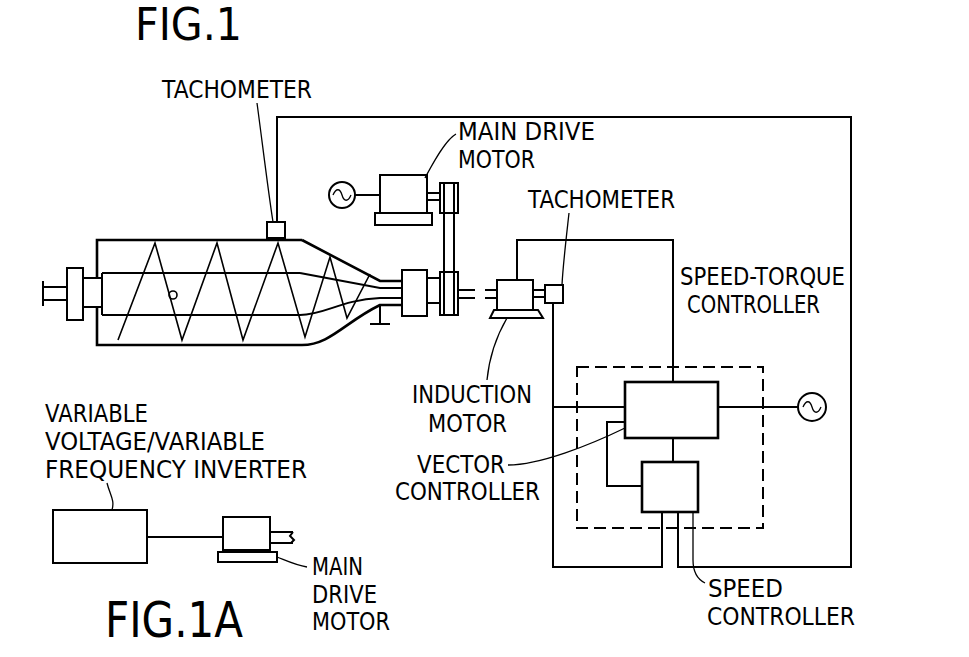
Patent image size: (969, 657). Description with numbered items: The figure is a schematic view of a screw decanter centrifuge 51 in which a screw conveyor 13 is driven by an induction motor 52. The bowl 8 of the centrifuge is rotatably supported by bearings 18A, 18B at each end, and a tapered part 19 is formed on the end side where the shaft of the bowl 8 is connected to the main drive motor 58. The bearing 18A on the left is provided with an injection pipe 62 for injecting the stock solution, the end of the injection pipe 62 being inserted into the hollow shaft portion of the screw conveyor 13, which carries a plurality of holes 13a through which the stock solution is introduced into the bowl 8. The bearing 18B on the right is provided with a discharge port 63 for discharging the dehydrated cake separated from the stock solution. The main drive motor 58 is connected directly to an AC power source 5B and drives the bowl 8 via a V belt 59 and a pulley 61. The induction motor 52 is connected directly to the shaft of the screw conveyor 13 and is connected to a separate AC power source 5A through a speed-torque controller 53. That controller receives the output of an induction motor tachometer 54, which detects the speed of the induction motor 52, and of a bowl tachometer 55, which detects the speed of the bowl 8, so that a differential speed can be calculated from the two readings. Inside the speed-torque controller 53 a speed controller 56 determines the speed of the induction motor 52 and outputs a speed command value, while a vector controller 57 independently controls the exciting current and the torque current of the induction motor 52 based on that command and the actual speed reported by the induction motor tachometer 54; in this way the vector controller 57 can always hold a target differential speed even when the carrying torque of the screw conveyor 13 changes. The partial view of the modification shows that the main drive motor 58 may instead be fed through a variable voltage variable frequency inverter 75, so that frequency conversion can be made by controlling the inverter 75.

In FIG. 1, the screw decanter centrifuge 51 is at (190, 232).
In FIG. 1, the bowl 8 is at (128, 346).
In FIG. 1, the screw conveyor 13 is at (236, 339).
In FIG. 1, the holes 13a is at (175, 299).
In FIG. 1, the tapered part 19 is at (323, 330).
In FIG. 1, the injection pipe 62 is at (55, 285).
In FIG. 1, the bearing 18A is at (73, 320).
In FIG. 1, the bearing 18B is at (410, 317).
In FIG. 1, the bowl tachometer 55 is at (270, 226).
In FIG. 1, the discharge port 63 is at (380, 327).
In FIG. 1, the V belt 59 is at (458, 232).
In FIG. 1, the pulley 61 is at (459, 316).
In FIG. 1, the main drive motor 58 is at (404, 184).
In FIG. 1A, the main drive motor 58 is at (267, 517).
In FIG. 1, the AC power source 5B is at (341, 182).
In FIG. 1, the induction motor 52 is at (520, 319).
In FIG. 1, the induction motor tachometer 54 is at (563, 293).
In FIG. 1, the speed-torque controller 53 is at (697, 367).
In FIG. 1, the vector controller 57 is at (718, 428).
In FIG. 1, the speed controller 56 is at (698, 497).
In FIG. 1, the AC power source 5A is at (808, 393).
In FIG. 1A, the variable voltage variable frequency inverter 75 is at (97, 563).